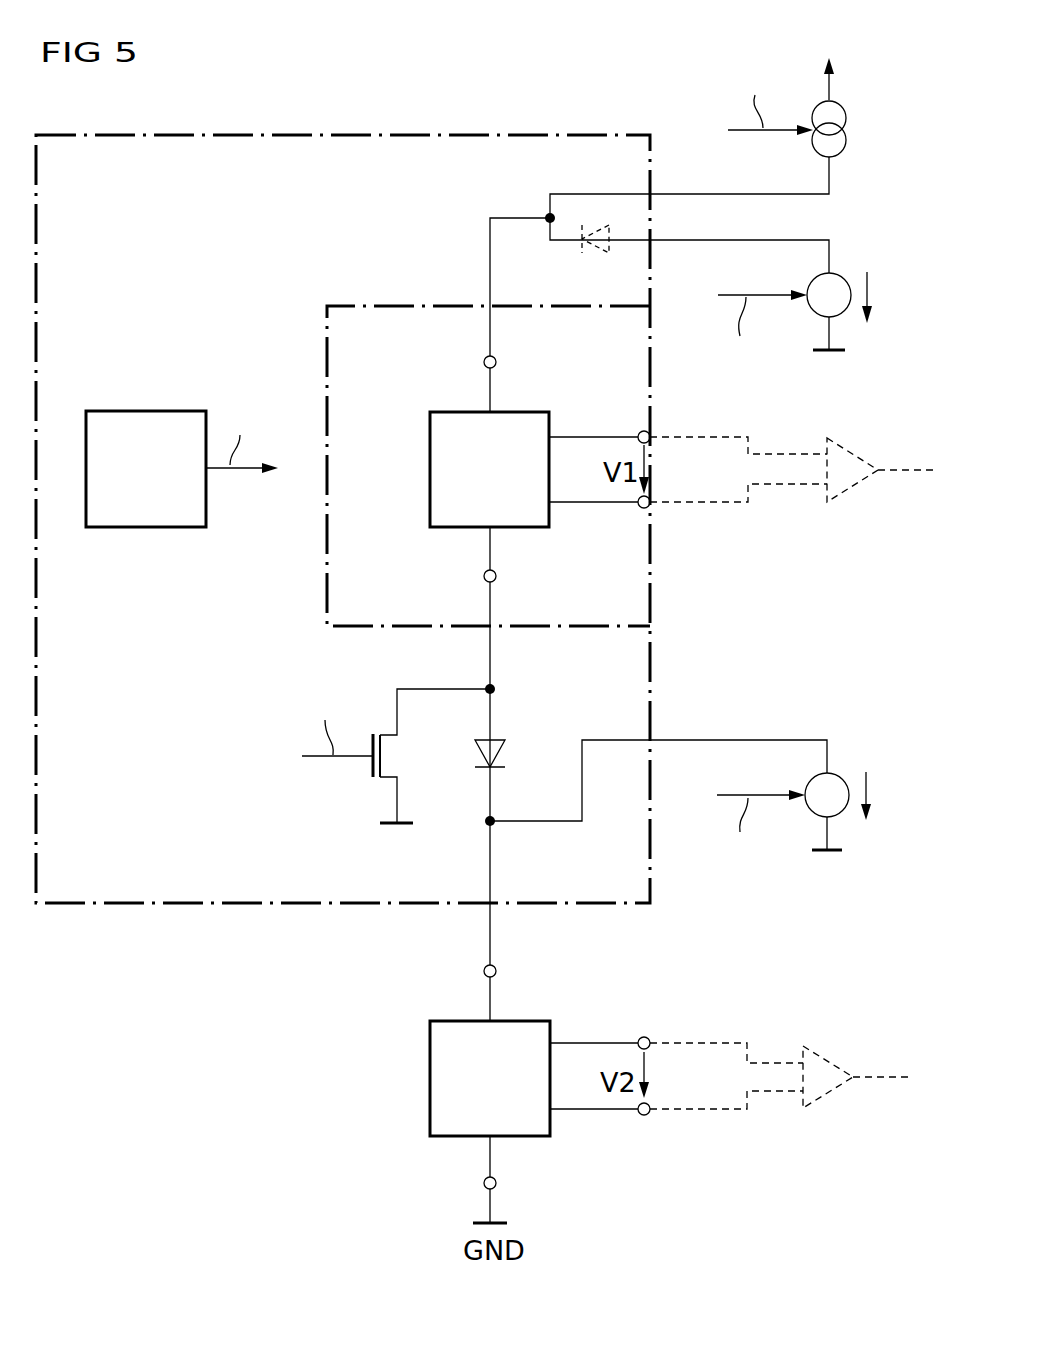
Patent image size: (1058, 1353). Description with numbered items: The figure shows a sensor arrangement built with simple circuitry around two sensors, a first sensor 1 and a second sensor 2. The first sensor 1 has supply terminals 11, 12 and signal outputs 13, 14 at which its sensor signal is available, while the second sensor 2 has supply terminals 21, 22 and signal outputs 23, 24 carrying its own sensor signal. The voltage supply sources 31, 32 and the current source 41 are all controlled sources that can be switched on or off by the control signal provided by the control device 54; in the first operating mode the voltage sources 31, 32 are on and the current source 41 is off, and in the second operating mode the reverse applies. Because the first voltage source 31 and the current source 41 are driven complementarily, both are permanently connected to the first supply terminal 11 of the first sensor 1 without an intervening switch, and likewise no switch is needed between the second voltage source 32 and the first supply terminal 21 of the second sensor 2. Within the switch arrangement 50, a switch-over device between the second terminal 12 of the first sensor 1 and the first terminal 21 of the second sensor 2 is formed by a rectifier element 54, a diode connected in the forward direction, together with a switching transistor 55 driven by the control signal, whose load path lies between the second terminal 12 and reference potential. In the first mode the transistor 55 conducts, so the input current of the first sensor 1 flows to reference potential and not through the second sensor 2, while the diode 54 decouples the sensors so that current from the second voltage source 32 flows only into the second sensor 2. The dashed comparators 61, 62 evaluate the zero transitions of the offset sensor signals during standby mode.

The first sensor 1 is at (430, 470).
The second sensor 2 is at (430, 1078).
The first supply terminal of the first sensor 11 is at (496, 361).
The second supply terminal of the first sensor 12 is at (496, 575).
The signal output of the first sensor 13 is at (647, 430).
The signal output of the first sensor 14 is at (644, 510).
The first supply terminal of the second sensor 21 is at (496, 970).
The second supply terminal of the second sensor 22 is at (496, 1182).
The signal output of the second sensor 23 is at (647, 1036).
The signal output of the second sensor 24 is at (644, 1117).
The first voltage source 31 is at (843, 271).
The second voltage source 32 is at (843, 771).
The current source 41 is at (845, 120).
The switch arrangement 50 is at (290, 904).
The control device / rectifier element 54 is at (147, 410).
The switching transistor 55 is at (371, 765).
The comparator 61 is at (855, 490).
The comparator 62 is at (832, 1092).